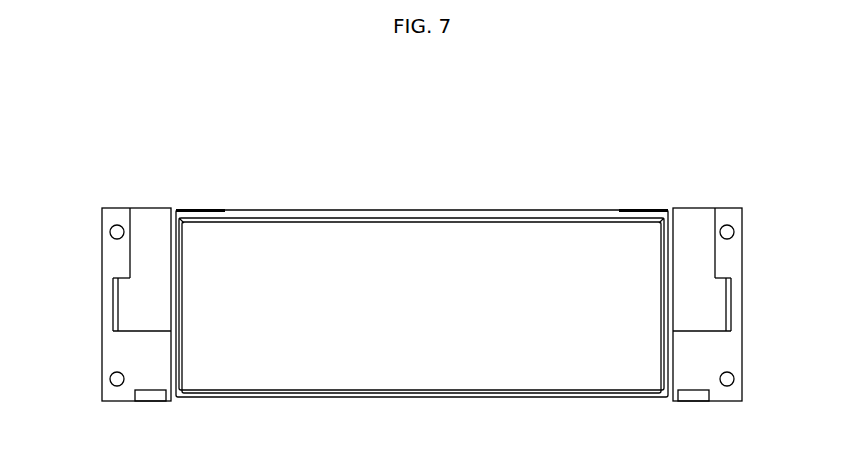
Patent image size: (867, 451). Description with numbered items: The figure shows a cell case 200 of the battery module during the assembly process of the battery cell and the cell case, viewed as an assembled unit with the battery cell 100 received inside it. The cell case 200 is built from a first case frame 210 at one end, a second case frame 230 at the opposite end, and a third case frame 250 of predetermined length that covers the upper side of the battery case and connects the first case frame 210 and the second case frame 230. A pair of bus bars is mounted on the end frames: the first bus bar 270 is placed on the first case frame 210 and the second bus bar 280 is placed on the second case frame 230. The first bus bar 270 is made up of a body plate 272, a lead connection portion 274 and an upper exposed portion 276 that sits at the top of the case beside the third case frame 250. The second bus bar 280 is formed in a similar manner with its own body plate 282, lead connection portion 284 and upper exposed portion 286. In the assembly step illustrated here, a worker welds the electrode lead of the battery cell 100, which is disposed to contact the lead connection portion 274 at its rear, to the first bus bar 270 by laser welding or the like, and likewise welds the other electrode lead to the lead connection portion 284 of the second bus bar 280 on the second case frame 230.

The cell case 200 is at (388, 135).
The display panel 100 is at (423, 352).
The third case frame 250 is at (422, 303).
The first bus bar 270 is at (110, 292).
The body plate 272 is at (145, 259).
The lead connection portion 274 is at (120, 303).
The upper exposed portion 276 is at (193, 208).
The second bus bar 280 is at (733, 292).
The body plate 282 is at (700, 258).
The lead connection portion 284 is at (722, 304).
The upper exposed portion 286 is at (641, 208).
The first case frame 210 is at (143, 372).
The second case frame 230 is at (700, 372).